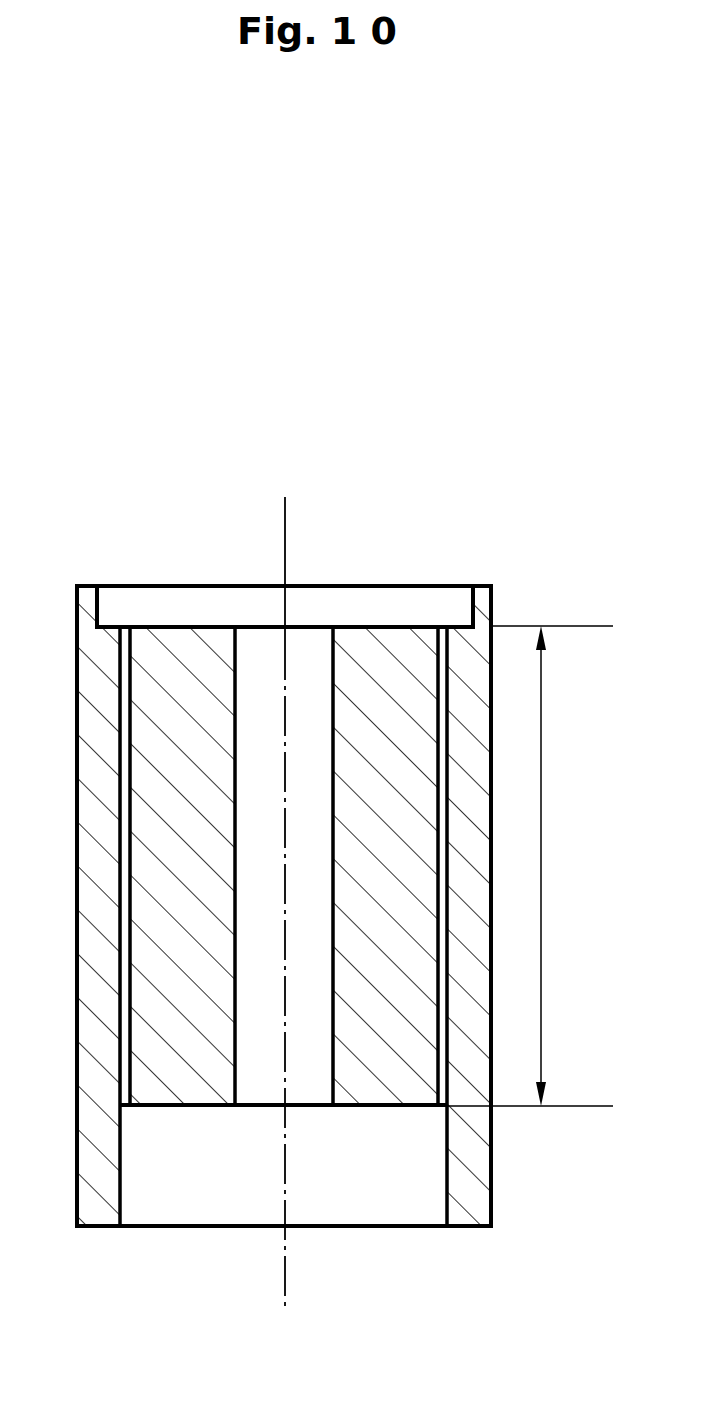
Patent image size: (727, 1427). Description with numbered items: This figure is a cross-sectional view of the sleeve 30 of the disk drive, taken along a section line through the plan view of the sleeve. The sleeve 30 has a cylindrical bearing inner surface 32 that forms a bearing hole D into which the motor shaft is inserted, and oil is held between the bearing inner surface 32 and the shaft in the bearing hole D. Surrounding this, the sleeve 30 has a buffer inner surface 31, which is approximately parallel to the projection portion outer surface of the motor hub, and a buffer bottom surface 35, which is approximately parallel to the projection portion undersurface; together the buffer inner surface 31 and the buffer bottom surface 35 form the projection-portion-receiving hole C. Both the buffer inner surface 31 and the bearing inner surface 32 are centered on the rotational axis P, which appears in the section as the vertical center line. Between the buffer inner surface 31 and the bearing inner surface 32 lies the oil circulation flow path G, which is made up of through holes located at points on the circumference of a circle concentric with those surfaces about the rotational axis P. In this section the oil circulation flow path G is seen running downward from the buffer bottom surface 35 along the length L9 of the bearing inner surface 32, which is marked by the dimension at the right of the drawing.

The sleeve 30 is at (287, 386).
The buffer inner surface 31 is at (462, 590).
The bearing inner surface 32 is at (243, 660).
The buffer bottom surface 35 is at (403, 625).
The projection-portion-receiving hole C is at (339, 602).
The oil circulation flow path G is at (125, 625).
The bearing hole D is at (268, 663).
The rotational axis P is at (284, 876).
The length of the bearing inner surface L9 is at (530, 866).